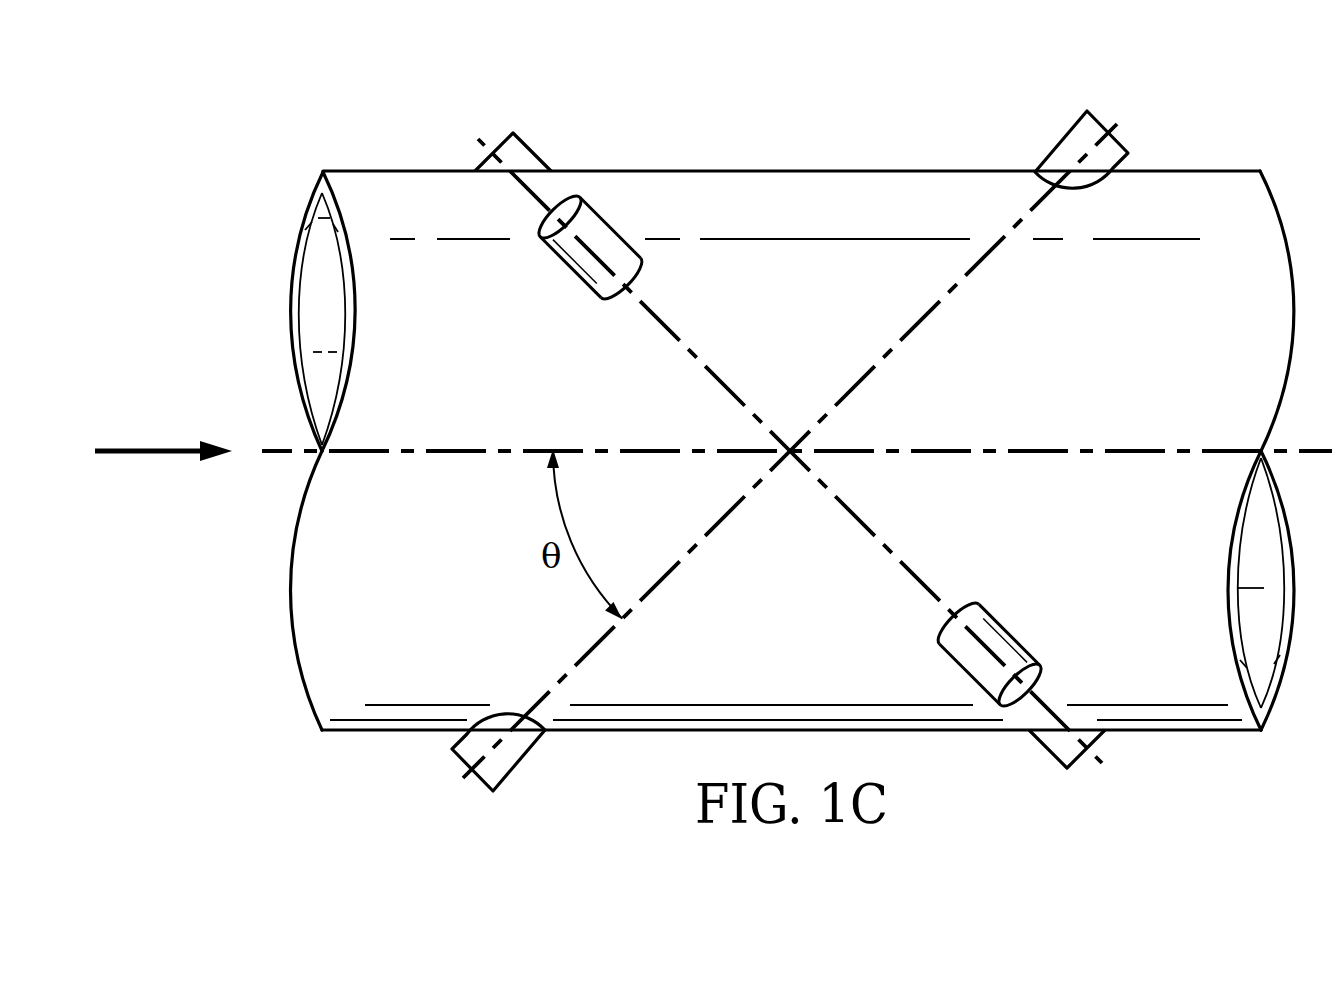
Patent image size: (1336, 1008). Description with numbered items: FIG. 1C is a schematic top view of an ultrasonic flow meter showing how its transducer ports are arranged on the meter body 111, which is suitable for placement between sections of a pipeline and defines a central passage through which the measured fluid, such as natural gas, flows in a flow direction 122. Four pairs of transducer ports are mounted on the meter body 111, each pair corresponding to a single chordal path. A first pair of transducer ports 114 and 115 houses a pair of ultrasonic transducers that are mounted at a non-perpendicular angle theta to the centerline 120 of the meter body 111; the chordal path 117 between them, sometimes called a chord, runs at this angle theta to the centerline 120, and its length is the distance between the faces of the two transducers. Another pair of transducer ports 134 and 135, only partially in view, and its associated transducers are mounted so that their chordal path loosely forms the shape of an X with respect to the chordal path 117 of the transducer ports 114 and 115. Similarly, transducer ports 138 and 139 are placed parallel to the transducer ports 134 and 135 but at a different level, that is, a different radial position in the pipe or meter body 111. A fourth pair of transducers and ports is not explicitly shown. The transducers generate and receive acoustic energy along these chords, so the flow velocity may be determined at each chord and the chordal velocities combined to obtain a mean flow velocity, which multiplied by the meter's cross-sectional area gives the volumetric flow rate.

The meter body 111 is at (1188, 170).
The transducer port 114 is at (1060, 138).
The transducer port 115 is at (525, 763).
The chordal path 117 is at (952, 289).
The centerline 120 is at (1130, 440).
The flow direction 122 is at (155, 448).
The transducer port 134 is at (533, 146).
The transducer port 135 is at (1048, 750).
The transducer port 138 is at (568, 265).
The transducer port 139 is at (1017, 630).